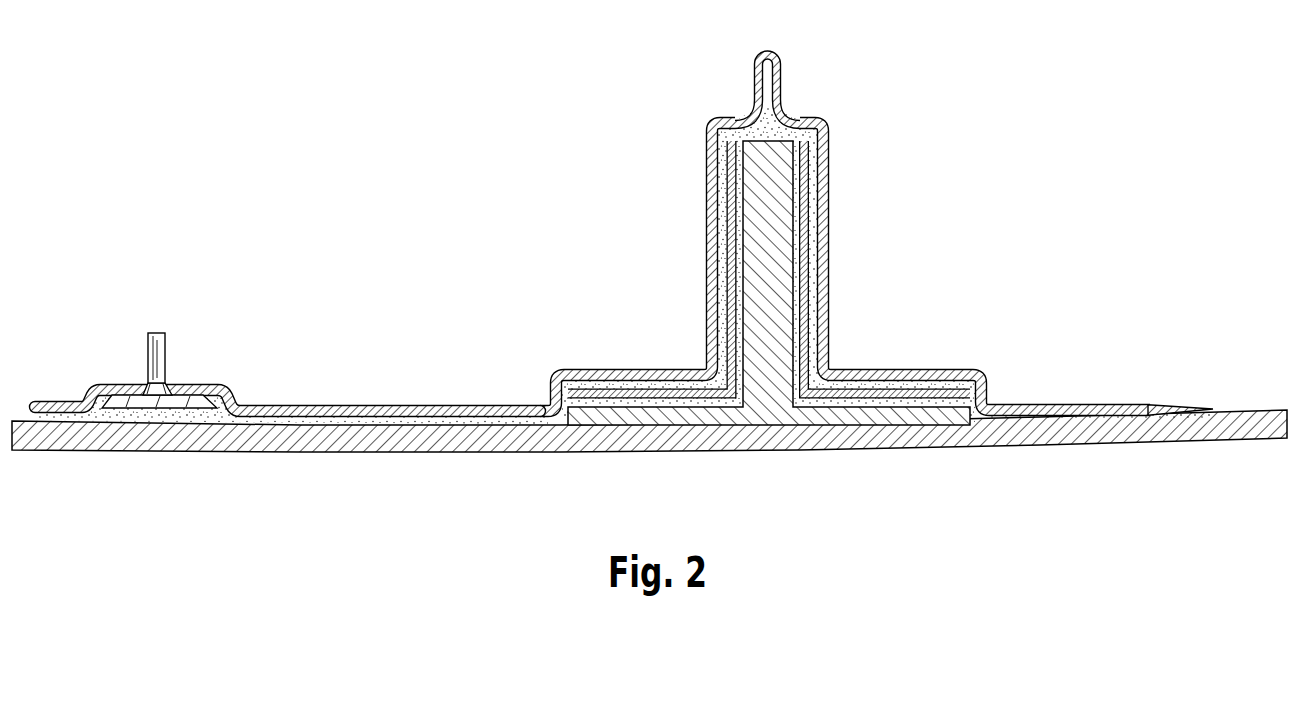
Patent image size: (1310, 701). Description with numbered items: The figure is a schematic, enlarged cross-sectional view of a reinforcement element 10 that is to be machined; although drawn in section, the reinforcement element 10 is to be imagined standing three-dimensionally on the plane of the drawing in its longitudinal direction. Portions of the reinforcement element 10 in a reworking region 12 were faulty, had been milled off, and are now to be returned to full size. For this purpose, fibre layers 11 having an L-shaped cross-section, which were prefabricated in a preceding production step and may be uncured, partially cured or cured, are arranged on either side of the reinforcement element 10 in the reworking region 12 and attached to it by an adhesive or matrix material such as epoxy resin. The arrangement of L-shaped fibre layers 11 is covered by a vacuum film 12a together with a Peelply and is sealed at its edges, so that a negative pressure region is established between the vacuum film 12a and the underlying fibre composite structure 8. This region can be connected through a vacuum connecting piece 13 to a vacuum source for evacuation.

The fibre composite structure 8 is at (595, 443).
The reinforcement element 10 is at (767, 187).
The fibre layers 11 is at (730, 237).
The reworking region 12 is at (642, 323).
The vacuum film 12a is at (557, 373).
The vacuum connecting piece 13 is at (138, 377).